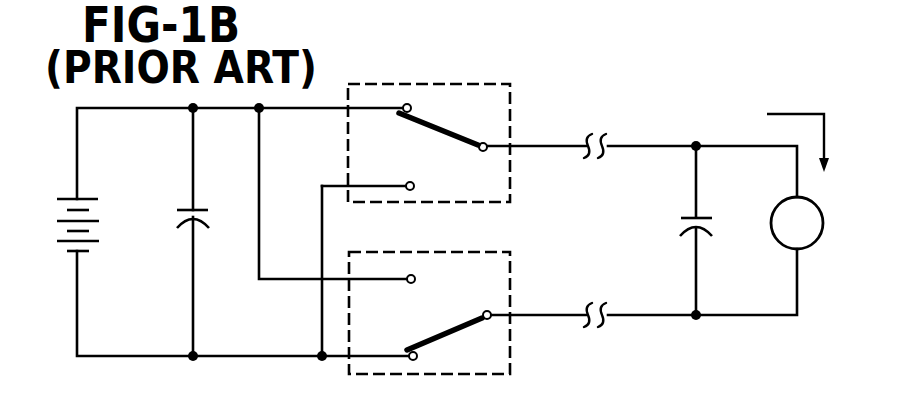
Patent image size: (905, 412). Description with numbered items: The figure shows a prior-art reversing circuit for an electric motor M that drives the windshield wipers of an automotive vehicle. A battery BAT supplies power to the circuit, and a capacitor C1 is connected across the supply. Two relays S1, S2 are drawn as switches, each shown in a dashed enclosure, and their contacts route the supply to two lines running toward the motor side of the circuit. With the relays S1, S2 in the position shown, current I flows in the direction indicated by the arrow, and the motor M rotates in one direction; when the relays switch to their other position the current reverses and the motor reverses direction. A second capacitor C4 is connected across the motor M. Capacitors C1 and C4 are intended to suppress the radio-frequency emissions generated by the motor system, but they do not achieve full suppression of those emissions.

The battery BAT is at (104, 225).
The capacitor C1 is at (207, 222).
The relay S1 is at (429, 143).
The relay S2 is at (429, 313).
The capacitor C4 is at (714, 230).
The electric motor M is at (797, 223).
The current I is at (804, 131).